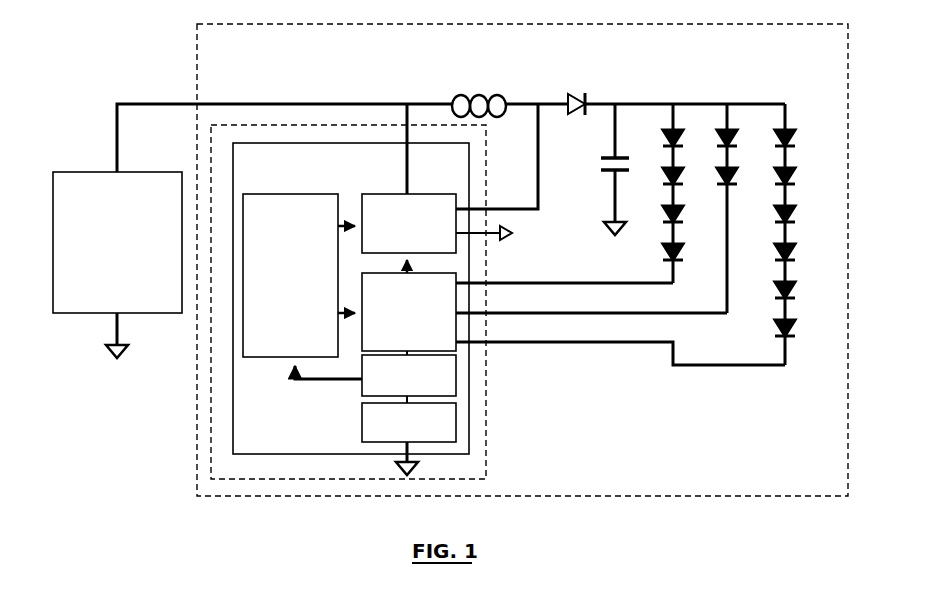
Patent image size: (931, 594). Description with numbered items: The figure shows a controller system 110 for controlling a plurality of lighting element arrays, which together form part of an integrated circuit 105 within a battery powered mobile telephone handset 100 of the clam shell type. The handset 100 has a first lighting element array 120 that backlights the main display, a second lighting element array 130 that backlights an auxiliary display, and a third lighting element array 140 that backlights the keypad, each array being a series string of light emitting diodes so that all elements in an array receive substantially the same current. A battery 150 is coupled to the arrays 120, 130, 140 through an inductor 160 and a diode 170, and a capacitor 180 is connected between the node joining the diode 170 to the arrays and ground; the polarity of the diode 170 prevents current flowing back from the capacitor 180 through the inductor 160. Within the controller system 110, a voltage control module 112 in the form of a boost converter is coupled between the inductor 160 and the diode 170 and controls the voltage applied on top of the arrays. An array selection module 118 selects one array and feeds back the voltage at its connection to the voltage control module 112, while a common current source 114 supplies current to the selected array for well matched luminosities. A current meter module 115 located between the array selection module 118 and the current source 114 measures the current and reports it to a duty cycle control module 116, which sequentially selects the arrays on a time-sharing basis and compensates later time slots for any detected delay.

The mobile telephone handset 100 is at (60, 50).
The integrated circuit 105 is at (253, 497).
The controller system 110 is at (240, 385).
The voltage control module 112 is at (458, 212).
The current source 114 is at (458, 432).
The current meter module 115 is at (458, 388).
The duty cycle control module 116 is at (255, 328).
The array selection module 118 is at (458, 345).
The first lighting element array 120 is at (676, 90).
The second lighting element array 130 is at (733, 90).
The third lighting element array 140 is at (791, 90).
The battery 150 is at (80, 183).
The inductor 160 is at (470, 95).
The diode 170 is at (572, 93).
The capacitor 180 is at (603, 170).